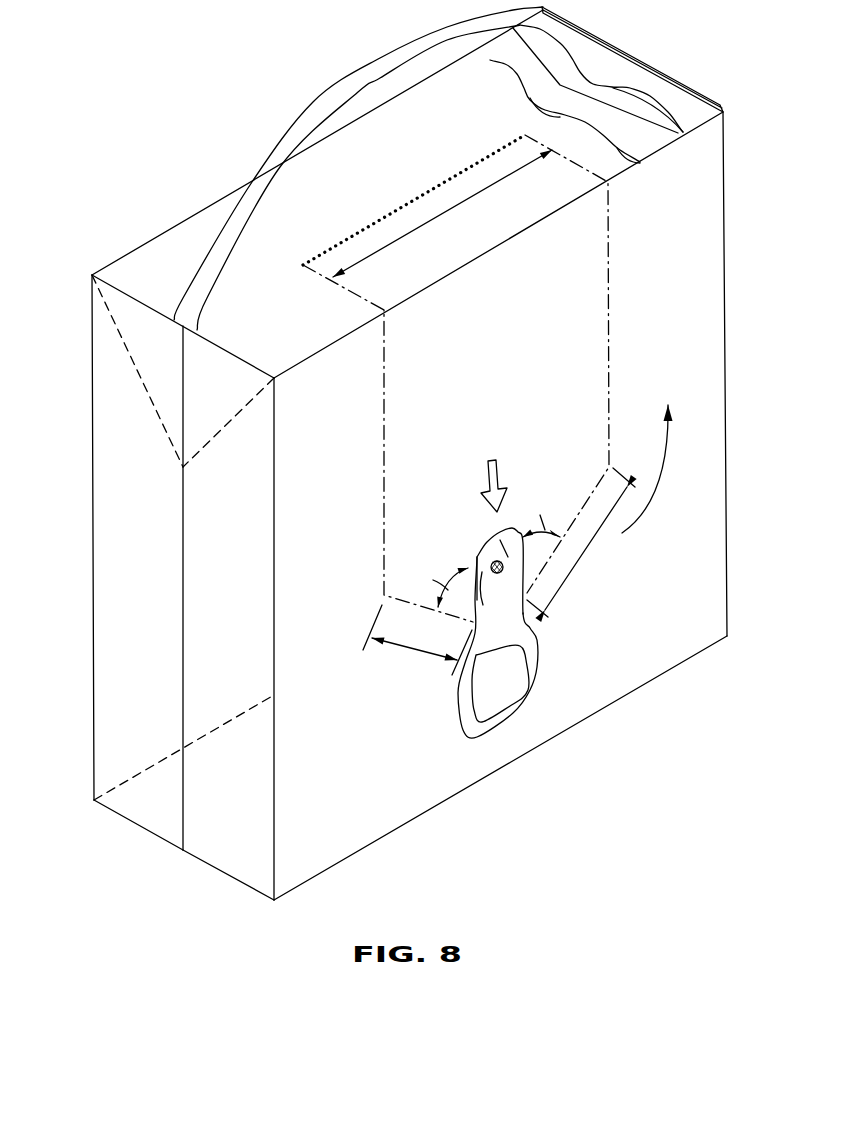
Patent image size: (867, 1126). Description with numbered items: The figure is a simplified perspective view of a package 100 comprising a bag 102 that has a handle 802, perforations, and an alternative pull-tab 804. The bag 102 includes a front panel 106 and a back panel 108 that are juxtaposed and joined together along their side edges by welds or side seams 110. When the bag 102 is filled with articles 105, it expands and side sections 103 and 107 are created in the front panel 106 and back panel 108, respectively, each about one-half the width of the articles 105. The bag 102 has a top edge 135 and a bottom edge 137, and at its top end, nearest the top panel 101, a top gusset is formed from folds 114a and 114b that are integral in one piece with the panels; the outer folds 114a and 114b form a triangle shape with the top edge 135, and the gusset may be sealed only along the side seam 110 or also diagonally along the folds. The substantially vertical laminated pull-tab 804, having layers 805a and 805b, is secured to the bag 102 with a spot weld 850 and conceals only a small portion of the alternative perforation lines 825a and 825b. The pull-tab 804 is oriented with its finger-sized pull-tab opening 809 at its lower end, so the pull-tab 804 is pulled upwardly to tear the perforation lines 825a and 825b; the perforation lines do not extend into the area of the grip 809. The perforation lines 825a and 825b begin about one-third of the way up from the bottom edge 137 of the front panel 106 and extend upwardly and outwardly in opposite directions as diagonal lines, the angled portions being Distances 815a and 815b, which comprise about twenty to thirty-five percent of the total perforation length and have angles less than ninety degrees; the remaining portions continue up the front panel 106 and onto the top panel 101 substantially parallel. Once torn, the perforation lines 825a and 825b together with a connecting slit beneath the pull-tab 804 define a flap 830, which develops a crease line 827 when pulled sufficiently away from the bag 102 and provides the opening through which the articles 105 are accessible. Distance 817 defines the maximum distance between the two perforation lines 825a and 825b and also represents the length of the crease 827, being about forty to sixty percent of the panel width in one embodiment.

The package 100 is at (235, 78).
The top panel 101 is at (215, 207).
The bag 102 is at (728, 376).
The side section 103 is at (225, 870).
The articles 105 is at (642, 125).
The front panel 106 is at (617, 688).
The side section 107 is at (132, 815).
The back panel 108 is at (94, 683).
The side seam 110 is at (183, 588).
The gusset fold 114a is at (160, 416).
The gusset fold 114b is at (217, 437).
The top edge 135 is at (162, 312).
The bottom edge 137 is at (503, 770).
The handle 802 is at (353, 88).
The pull-tab 804 is at (460, 707).
The layer 805a is at (487, 555).
The layer 805b is at (500, 622).
The pull-tab opening 809 is at (513, 670).
The distance 815a is at (412, 650).
The distance 815b is at (587, 547).
The distance 817 is at (452, 212).
The perforation line 825a is at (385, 455).
The perforation line 825b is at (610, 290).
The crease line 827 is at (413, 200).
The flap 830 is at (413, 388).
The spot weld 850 is at (498, 560).